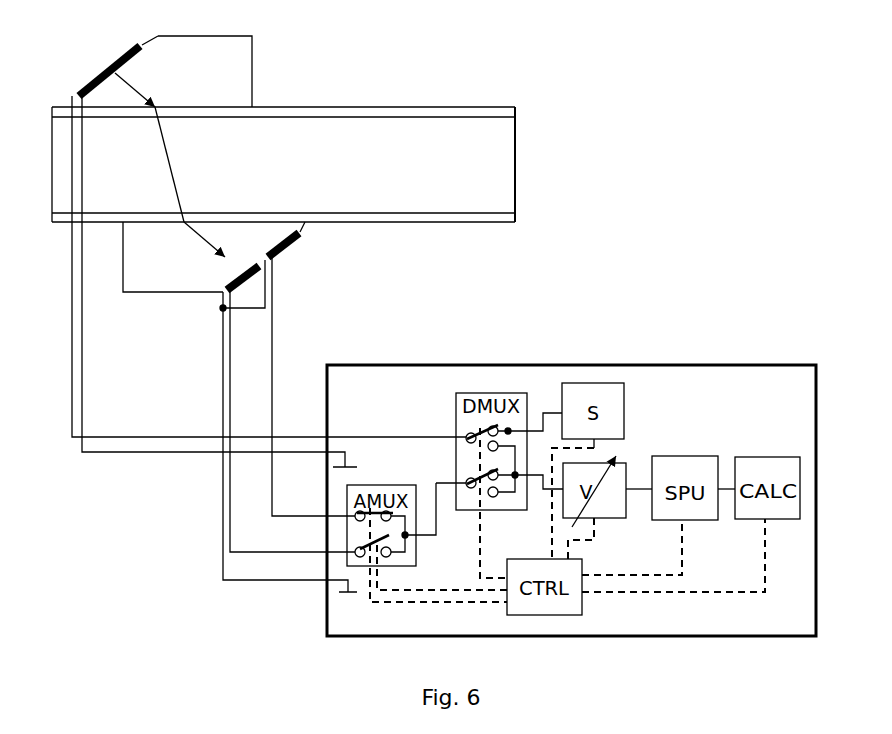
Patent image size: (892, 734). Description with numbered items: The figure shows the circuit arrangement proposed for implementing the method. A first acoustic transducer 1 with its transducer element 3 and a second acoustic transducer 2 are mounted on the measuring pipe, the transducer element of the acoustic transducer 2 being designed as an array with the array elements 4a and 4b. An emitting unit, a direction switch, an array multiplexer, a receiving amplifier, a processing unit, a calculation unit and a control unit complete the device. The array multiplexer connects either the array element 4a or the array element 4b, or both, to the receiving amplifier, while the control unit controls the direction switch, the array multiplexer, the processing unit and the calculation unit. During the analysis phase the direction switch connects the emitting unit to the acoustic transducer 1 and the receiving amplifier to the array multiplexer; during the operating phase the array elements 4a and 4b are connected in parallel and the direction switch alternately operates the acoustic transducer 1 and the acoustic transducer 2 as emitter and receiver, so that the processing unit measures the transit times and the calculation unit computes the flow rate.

The acoustic transducer 1 is at (197, 71).
The acoustic transducer 2 is at (173, 257).
The transducer element 3 is at (100, 71).
The array element 4a is at (294, 243).
The array element 4b is at (258, 283).